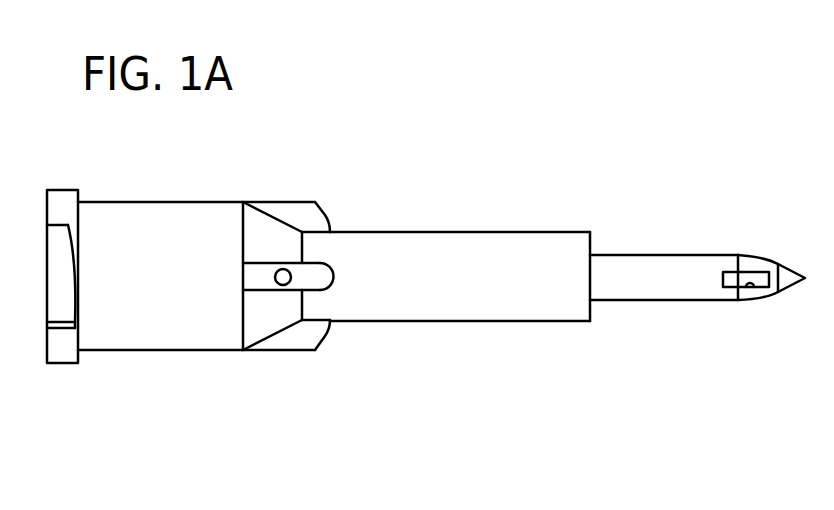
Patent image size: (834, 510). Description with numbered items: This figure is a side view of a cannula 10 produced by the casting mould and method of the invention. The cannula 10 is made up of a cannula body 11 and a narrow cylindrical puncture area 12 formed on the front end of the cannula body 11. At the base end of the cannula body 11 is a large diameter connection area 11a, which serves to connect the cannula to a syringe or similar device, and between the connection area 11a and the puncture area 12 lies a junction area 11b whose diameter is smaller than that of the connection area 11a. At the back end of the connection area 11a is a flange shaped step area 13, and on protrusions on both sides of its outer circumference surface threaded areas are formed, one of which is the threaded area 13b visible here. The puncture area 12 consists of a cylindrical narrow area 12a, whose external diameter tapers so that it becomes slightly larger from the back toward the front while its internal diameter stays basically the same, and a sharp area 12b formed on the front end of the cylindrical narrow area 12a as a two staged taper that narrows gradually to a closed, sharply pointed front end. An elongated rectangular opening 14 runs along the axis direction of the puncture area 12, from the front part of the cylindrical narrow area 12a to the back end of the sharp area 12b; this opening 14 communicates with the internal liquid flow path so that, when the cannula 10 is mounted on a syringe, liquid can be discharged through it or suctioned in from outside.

The cannula 10 is at (558, 150).
The cannula body 11 is at (368, 151).
The connection area 11a is at (222, 200).
The junction area 11b is at (357, 231).
The puncture area 12 is at (778, 212).
The cylindrical narrow area 12a is at (701, 266).
The sharp area 12b is at (752, 264).
The step area 13 is at (63, 200).
The threaded area 13b is at (66, 298).
The opening 14 is at (757, 285).